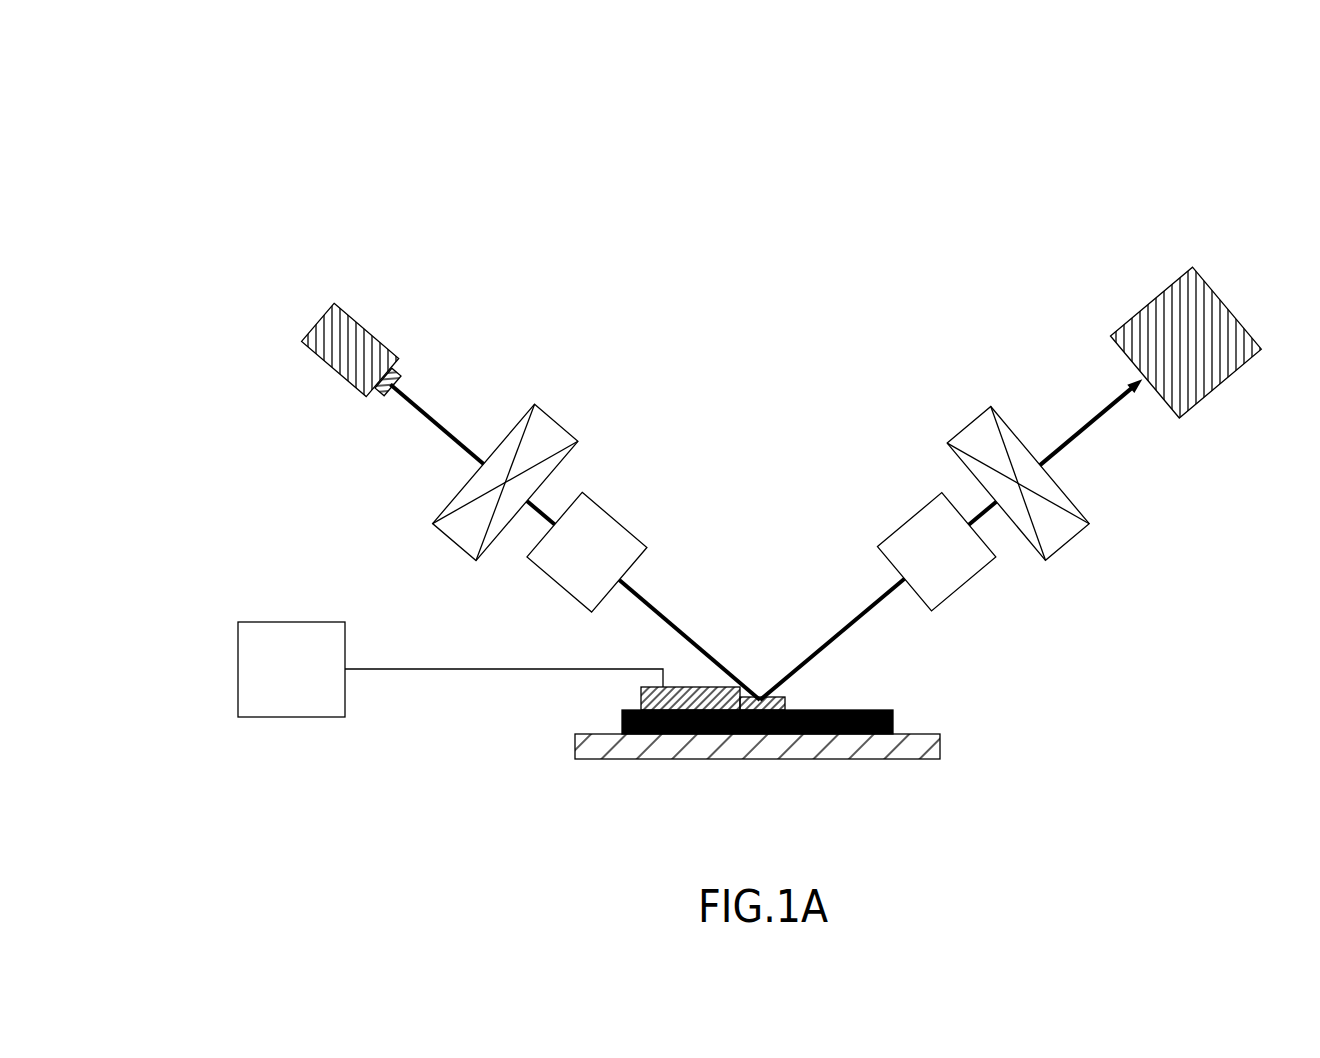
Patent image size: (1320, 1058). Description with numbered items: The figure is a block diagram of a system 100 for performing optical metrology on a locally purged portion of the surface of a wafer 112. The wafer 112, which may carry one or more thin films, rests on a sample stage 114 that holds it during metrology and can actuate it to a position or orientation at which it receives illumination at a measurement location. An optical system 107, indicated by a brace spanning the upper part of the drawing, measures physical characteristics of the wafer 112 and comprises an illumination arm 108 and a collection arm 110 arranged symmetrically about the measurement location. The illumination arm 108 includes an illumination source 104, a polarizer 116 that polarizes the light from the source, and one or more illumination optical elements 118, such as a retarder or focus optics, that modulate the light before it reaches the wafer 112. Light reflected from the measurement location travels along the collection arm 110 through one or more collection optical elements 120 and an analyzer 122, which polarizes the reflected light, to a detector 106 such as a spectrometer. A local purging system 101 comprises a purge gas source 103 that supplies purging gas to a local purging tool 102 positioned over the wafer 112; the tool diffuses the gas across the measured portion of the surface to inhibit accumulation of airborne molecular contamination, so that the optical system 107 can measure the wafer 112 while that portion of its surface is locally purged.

The system 100 is at (138, 52).
The local purging system 101 is at (215, 603).
The local purging tool 102 is at (783, 702).
The purge gas source 103 is at (292, 717).
The illumination source 104 is at (315, 318).
The detector 106 is at (1232, 392).
The optical system 107 is at (1083, 355).
The illumination arm 108 is at (484, 587).
The collection arm 110 is at (1147, 520).
The wafer 112 is at (622, 722).
The sample stage 114 is at (575, 747).
The polarizer 116 is at (555, 417).
The illumination optical elements 118 is at (618, 517).
The collection optical elements 120 is at (965, 587).
The analyzer 122 is at (1070, 543).